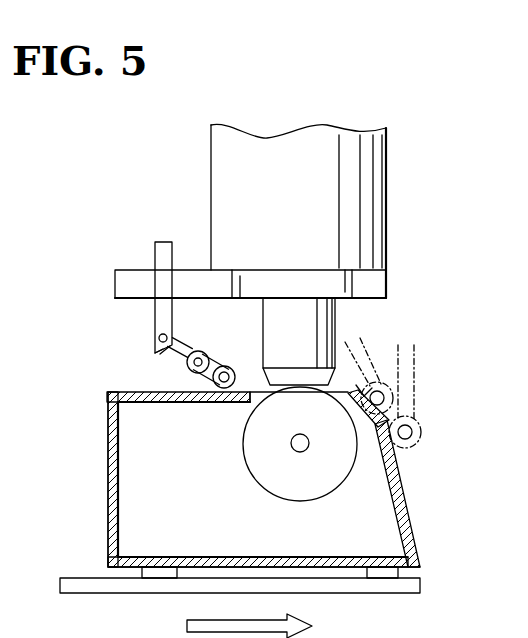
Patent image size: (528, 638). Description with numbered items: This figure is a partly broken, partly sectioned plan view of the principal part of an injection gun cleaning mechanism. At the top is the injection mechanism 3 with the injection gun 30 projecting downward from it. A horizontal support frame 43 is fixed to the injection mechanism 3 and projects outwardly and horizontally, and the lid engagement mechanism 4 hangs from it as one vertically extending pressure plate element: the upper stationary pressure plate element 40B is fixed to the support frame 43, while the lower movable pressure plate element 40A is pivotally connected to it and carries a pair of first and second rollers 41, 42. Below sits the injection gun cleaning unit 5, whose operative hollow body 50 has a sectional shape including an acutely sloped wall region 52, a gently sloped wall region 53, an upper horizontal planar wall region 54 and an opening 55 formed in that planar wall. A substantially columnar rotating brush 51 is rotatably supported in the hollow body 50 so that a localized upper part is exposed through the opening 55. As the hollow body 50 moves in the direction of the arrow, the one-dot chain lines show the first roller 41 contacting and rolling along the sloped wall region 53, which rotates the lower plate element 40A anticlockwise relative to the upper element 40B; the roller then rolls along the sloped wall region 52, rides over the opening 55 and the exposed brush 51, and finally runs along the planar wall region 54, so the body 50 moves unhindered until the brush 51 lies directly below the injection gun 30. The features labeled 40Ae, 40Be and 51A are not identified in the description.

The injection mechanism 3 is at (390, 173).
The injection gun 30 is at (297, 330).
The horizontal support frame 43 is at (125, 285).
The lid engagement mechanism 4 is at (272, 317).
The lower movable pressure plate element 40A is at (212, 392).
The upper stationary pressure plate element 40B is at (163, 250).
The end of first arm 40Ae is at (165, 354).
The end of second arm 40Be is at (155, 352).
The first roller 41 is at (231, 368).
The second roller 42 is at (201, 351).
The injection gun cleaning unit 5 is at (265, 487).
The operative hollow body 50 is at (145, 506).
The rotating brush 51 is at (318, 488).
The shaft 51A is at (298, 453).
The acutely sloped wall region 52 is at (382, 432).
The gently sloped wall region 53 is at (410, 478).
The upper horizontal planar wall region 54 is at (140, 392).
The opening 55 is at (262, 432).